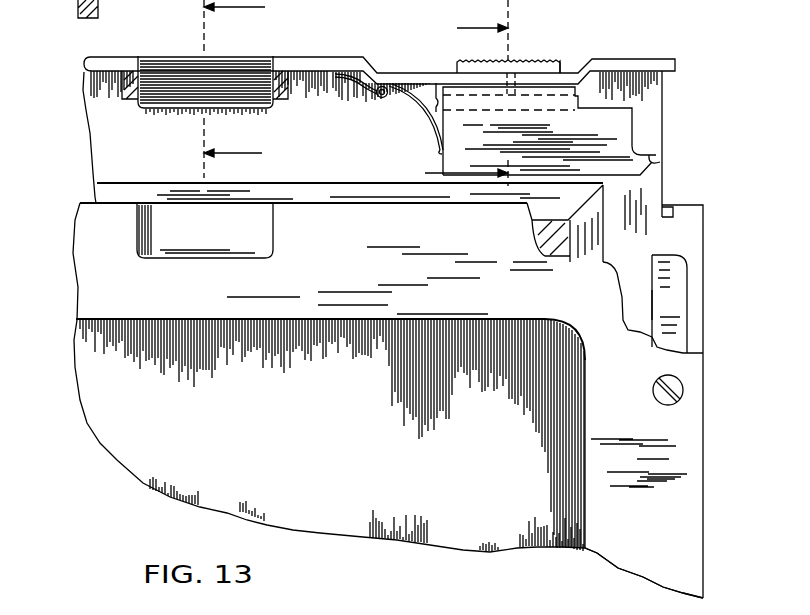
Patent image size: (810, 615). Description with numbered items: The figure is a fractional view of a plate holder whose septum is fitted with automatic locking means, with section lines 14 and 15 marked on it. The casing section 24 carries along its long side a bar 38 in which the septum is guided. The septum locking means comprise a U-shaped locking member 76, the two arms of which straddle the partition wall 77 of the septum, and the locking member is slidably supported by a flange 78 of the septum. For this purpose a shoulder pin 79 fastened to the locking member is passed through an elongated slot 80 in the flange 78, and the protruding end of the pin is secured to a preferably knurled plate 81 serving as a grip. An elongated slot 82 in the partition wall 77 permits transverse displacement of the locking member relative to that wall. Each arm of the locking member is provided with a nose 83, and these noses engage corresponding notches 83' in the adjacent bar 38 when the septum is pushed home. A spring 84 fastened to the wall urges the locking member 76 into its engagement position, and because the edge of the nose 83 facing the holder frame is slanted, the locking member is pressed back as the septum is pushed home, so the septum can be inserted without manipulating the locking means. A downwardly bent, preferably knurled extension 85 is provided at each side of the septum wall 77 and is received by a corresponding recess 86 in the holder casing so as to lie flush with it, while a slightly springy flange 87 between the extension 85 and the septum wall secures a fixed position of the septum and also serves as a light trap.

The section line 14- 14 is at (452, 95).
The section line 15- 15 is at (250, 89).
The casing section 24 is at (622, 552).
The bar 38 is at (672, 275).
The U-shaped locking member 76 is at (615, 124).
The partition wall 77 is at (652, 88).
The flange 78 is at (648, 68).
The shoulder pin 79 is at (525, 68).
The elongated slot 80 is at (458, 79).
The knurled plate 81 is at (564, 68).
The elongated slot 82 is at (436, 112).
The nose 83 is at (681, 155).
The notch 83' is at (639, 280).
The spring 84 is at (438, 128).
The knurled extension 85 is at (178, 97).
The recess 86 is at (265, 232).
The springy flange 87 is at (124, 92).